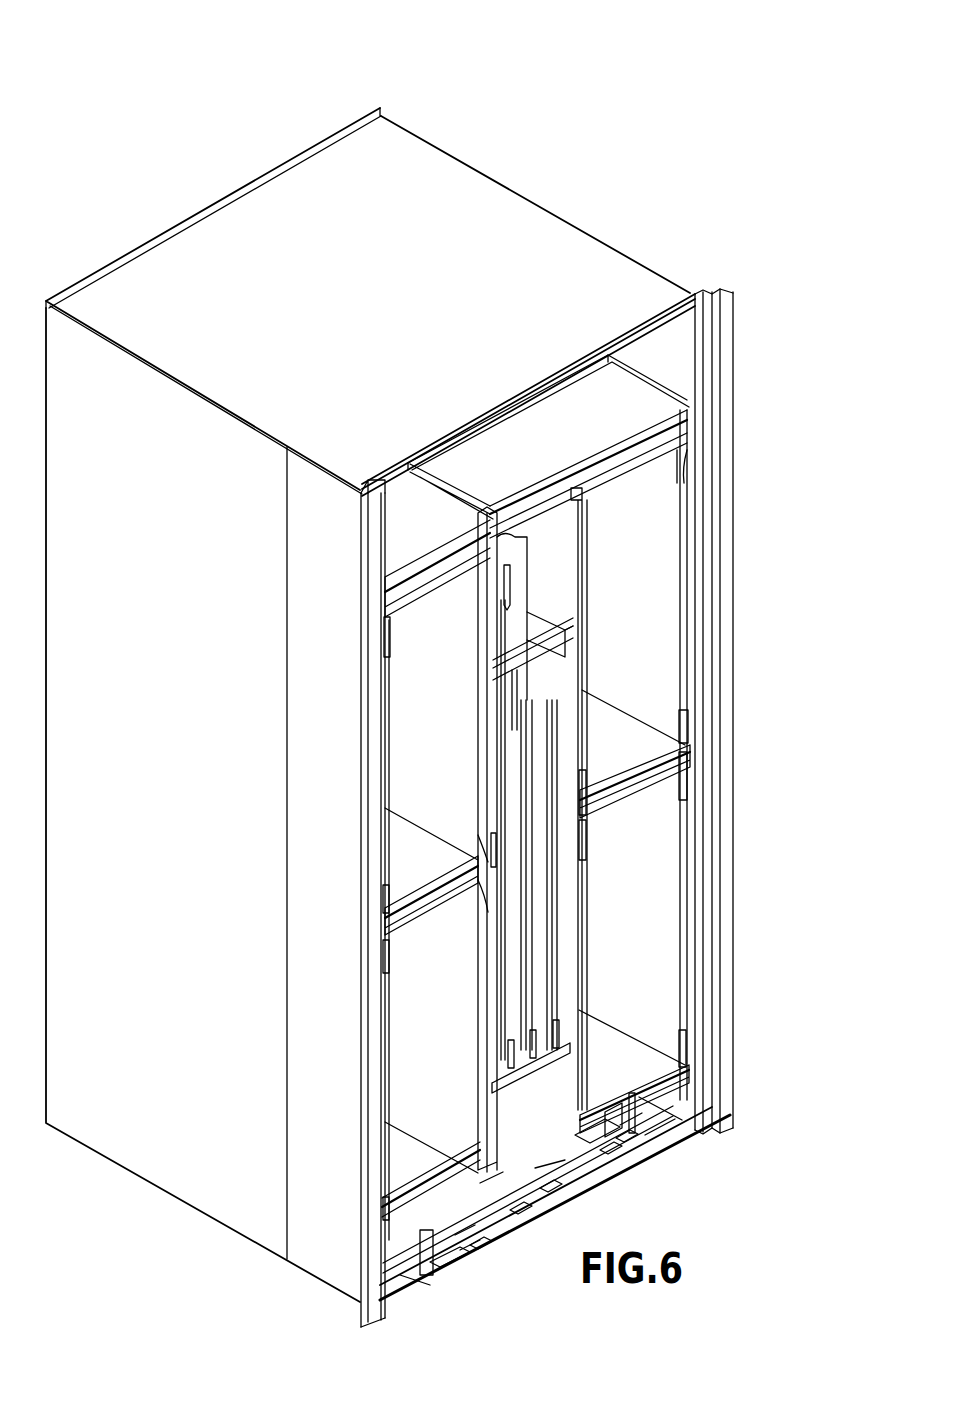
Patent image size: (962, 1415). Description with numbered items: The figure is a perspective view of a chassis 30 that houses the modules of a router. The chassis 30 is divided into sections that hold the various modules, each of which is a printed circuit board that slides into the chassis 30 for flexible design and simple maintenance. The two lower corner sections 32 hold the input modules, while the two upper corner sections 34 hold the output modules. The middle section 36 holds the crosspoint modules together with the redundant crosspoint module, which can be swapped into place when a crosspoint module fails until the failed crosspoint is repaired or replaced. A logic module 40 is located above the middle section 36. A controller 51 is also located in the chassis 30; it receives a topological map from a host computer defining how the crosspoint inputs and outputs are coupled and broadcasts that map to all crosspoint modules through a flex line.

The chassis 30 is at (389, 717).
The lower corner sections 32 is at (425, 1073).
The upper corner sections 34 is at (420, 683).
The middle section 36 is at (562, 764).
The logic module 40 is at (527, 593).
The controller 51 is at (508, 580).